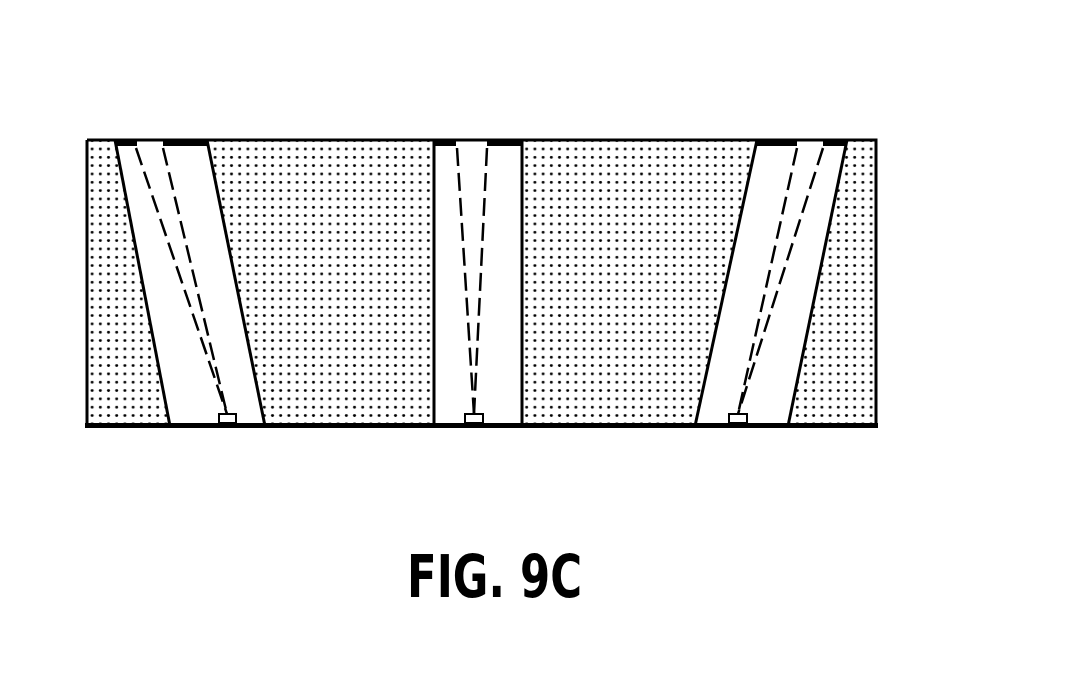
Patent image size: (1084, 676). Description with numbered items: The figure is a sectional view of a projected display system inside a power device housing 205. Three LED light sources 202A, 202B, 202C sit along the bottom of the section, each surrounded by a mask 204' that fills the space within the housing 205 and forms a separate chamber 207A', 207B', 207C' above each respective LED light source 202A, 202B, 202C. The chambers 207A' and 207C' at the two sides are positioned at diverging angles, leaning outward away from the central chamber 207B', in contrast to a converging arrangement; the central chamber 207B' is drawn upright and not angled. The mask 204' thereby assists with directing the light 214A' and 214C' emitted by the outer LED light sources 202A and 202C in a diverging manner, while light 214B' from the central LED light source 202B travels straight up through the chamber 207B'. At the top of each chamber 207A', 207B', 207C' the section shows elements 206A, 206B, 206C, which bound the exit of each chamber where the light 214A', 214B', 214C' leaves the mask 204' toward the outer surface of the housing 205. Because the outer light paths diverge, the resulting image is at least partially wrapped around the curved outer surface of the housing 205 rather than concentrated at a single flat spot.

The housing 205 is at (884, 163).
The mask 204' is at (481, 319).
The mask layer 206A is at (124, 140).
The mask layer 206B is at (450, 140).
The mask layer 206C is at (788, 140).
The light 214A' is at (181, 243).
The mask opening 214B' is at (491, 243).
The light 214C' is at (800, 243).
The chamber 207A' is at (190, 319).
The chamber 207B' is at (454, 319).
The chamber 207C' is at (747, 319).
The LED light source 202A is at (227, 428).
The LED light source 202B is at (475, 428).
The LED light source 202C is at (738, 428).